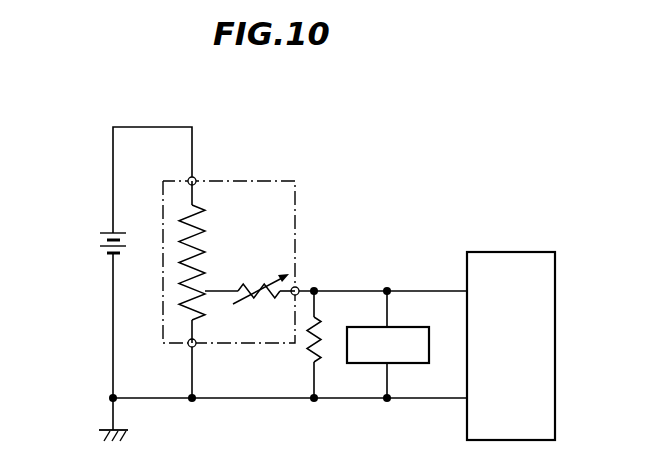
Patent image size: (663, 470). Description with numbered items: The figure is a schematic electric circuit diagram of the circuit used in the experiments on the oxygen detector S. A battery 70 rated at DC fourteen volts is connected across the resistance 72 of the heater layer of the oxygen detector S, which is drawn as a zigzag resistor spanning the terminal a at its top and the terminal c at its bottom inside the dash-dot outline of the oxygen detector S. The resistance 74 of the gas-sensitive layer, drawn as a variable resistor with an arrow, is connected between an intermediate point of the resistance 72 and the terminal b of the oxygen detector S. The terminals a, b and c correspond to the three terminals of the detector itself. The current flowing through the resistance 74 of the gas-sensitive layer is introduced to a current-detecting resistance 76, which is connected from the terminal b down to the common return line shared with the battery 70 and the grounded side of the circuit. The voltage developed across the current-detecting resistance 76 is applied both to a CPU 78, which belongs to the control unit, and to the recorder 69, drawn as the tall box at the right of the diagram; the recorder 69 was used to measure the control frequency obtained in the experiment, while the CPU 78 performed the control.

The recorder 69 is at (503, 251).
The battery 70 is at (110, 251).
The resistance of the heater layer 72 is at (200, 225).
The resistance of the gas-sensitive layer 74 is at (291, 248).
The current-detecting resistance 76 is at (322, 322).
The CPU 78 is at (412, 327).
The oxygen detector S is at (296, 178).
The terminal a is at (196, 178).
The terminal b is at (298, 287).
The terminal c is at (196, 346).